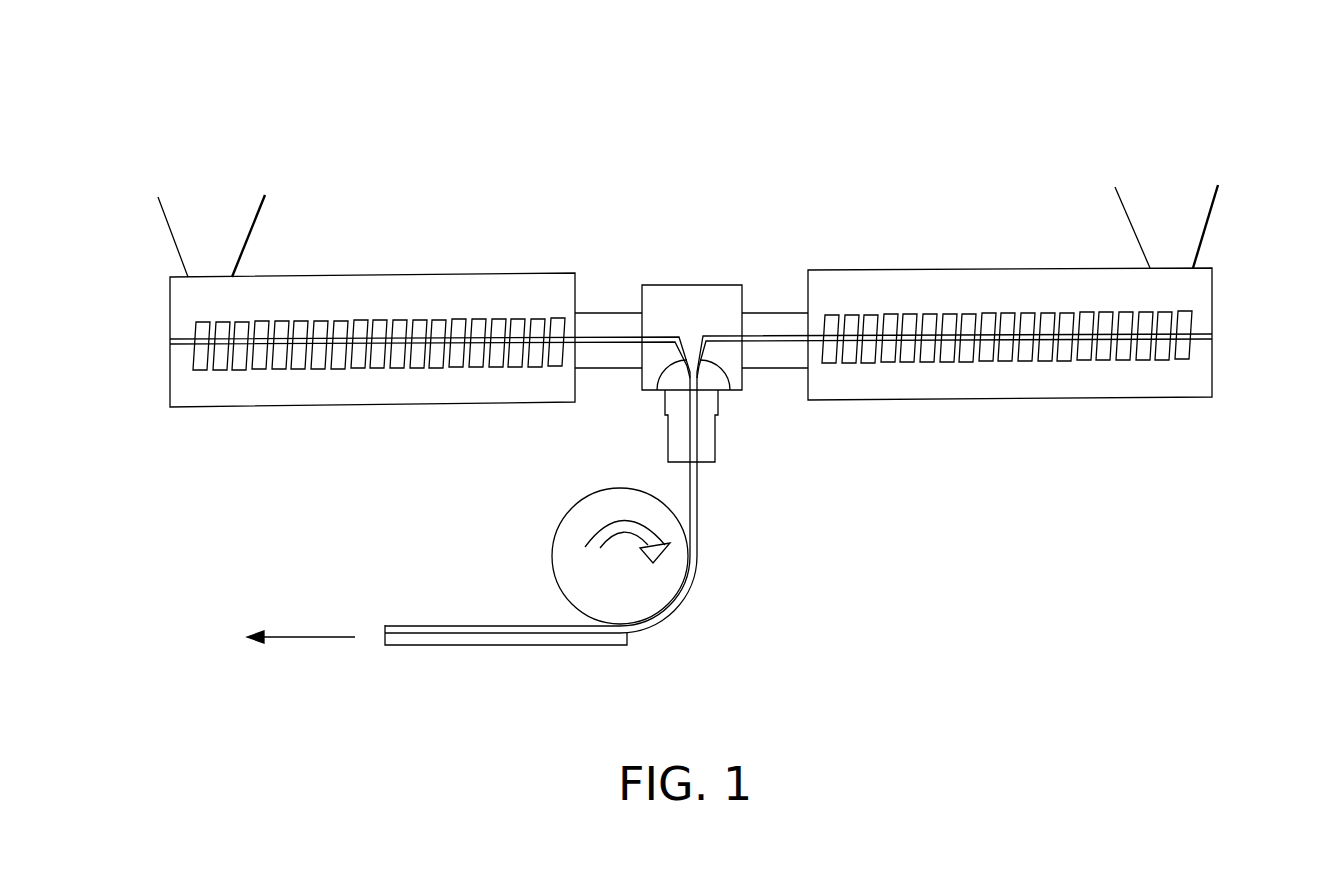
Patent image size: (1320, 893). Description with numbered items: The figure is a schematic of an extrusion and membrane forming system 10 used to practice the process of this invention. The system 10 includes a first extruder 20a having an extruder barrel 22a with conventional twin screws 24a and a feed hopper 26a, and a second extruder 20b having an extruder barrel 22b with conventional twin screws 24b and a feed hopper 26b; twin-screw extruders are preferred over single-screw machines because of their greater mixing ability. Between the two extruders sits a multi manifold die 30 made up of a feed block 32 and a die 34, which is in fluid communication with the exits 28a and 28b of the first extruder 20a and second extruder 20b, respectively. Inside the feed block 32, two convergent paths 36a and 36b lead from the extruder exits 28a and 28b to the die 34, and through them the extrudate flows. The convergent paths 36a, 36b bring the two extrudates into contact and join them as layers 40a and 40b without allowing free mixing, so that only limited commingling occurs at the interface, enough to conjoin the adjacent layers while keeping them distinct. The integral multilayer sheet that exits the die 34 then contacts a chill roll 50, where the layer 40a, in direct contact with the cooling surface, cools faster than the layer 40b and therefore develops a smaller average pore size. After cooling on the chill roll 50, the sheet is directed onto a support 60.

The system 10 is at (698, 103).
The first extruder 20a is at (340, 218).
The second extruder 20b is at (868, 232).
The extruder barrel 22a is at (398, 292).
The extruder barrel 22b is at (890, 292).
The twin screws 24a is at (440, 330).
The twin screws 24b is at (980, 325).
The feed hopper 26a is at (170, 245).
The feed hopper 26b is at (1205, 232).
The exit 28a is at (608, 330).
The exit 28b is at (773, 330).
The multi manifold die 30 is at (743, 394).
The feed block 32 is at (683, 300).
The die 34 is at (668, 448).
The convergent path 36a is at (657, 390).
The convergent path 36b is at (733, 397).
The layer 40a is at (687, 490).
The layer 40b is at (700, 537).
The chill roll 50 is at (575, 580).
The support 60 is at (583, 638).